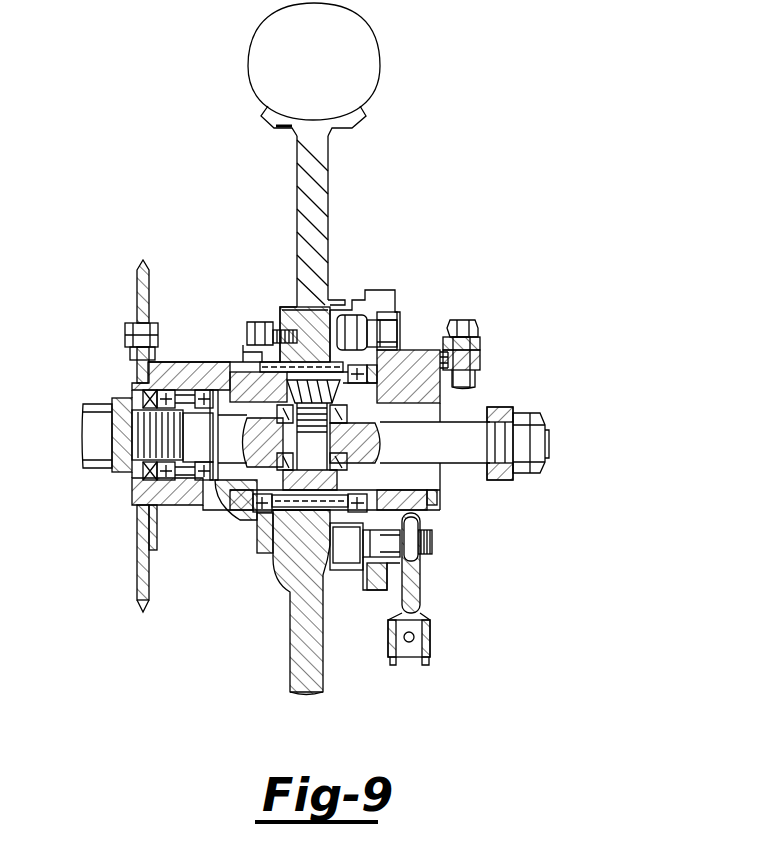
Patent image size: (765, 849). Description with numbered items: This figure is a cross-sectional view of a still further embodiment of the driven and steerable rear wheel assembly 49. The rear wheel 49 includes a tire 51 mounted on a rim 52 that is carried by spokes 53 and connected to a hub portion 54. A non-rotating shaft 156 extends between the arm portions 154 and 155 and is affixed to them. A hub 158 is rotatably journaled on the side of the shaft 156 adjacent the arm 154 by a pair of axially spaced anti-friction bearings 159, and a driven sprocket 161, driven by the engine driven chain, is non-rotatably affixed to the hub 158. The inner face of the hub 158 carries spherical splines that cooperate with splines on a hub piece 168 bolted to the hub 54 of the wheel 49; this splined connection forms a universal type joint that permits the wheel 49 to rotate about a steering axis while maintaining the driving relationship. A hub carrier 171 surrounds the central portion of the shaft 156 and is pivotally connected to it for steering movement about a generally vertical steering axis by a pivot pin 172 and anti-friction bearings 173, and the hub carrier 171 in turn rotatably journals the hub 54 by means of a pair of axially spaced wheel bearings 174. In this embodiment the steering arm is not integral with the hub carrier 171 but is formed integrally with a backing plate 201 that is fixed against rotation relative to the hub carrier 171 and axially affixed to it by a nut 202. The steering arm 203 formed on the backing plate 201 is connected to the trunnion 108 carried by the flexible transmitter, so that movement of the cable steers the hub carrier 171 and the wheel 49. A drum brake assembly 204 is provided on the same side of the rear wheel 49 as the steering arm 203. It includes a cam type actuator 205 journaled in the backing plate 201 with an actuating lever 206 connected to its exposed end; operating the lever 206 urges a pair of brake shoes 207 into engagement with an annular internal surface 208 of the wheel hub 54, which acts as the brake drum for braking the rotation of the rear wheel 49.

The driven rear wheel assembly 49 is at (249, 161).
The tire 51 is at (379, 48).
The rim 52 is at (362, 112).
The spokes 53 is at (322, 194).
The hub portion 54 is at (348, 302).
The trunnion 108 is at (479, 326).
The arm portion 154 is at (122, 400).
The arm portion 155 is at (512, 418).
The non-rotating shaft 156 is at (470, 418).
The hub 158 is at (165, 360).
The anti-friction bearings 159 is at (212, 482).
The driven sprocket 161 is at (140, 578).
The hub piece 168 is at (258, 500).
The hub carrier 171 is at (237, 478).
The pivot pin 172 is at (262, 335).
The anti-friction bearings 173 is at (372, 440).
The wheel bearings 174 is at (392, 348).
The backing plate 201 is at (392, 302).
The nut 202 is at (437, 500).
The steering arm 203 is at (446, 350).
The drum brake assembly 204 is at (356, 578).
The cam type actuator 205 is at (320, 540).
The actuating lever 206 is at (430, 645).
The brake shoes 207 is at (330, 578).
The annular internal surface 208 is at (300, 312).